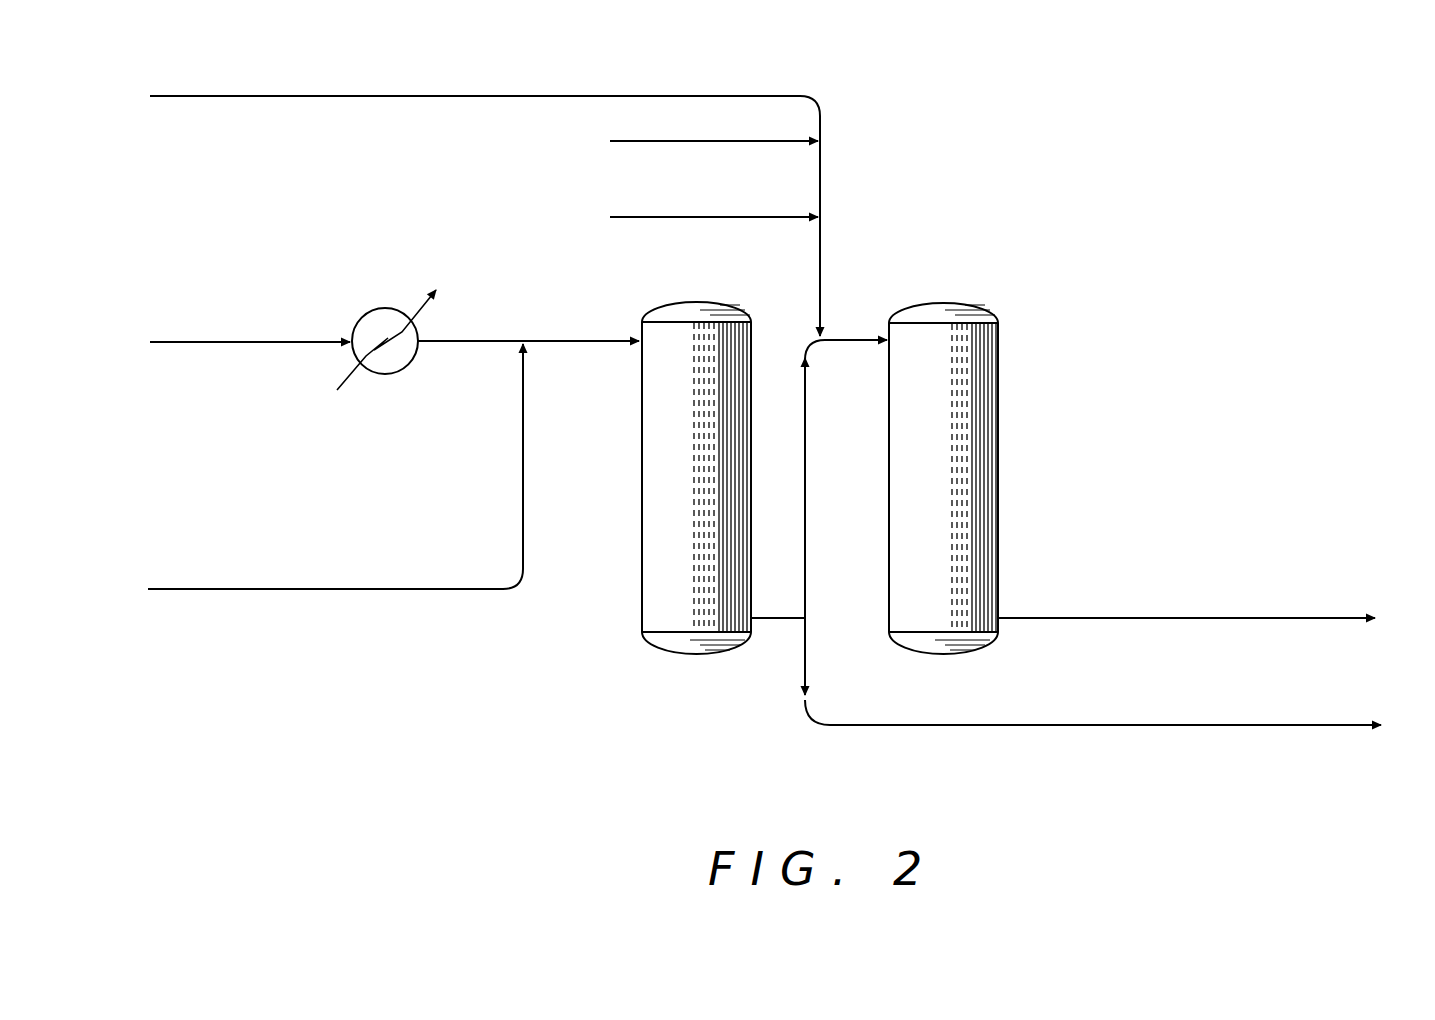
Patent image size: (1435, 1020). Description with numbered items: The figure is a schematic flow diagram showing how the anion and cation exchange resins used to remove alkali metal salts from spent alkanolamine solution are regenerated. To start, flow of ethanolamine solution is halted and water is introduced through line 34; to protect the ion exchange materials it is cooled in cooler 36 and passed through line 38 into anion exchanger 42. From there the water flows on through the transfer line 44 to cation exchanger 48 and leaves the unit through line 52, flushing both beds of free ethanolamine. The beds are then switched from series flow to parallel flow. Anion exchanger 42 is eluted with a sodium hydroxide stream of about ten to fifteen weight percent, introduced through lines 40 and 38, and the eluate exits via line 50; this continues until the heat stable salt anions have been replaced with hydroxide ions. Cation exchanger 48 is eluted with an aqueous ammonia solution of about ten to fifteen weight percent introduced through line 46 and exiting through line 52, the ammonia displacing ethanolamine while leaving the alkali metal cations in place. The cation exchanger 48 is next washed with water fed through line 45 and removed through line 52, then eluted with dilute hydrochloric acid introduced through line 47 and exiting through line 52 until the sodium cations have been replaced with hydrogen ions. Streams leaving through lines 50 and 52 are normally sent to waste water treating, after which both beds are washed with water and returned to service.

The line 34 is at (240, 344).
The cooler 36 is at (364, 312).
The line 38 is at (497, 340).
The line 40 is at (240, 591).
The anion exchanger 42 is at (716, 447).
The transfer line from anion exchanger to cation exchanger 44 is at (805, 460).
The line 45 is at (621, 145).
The line 46 is at (394, 98).
The line 47 is at (621, 220).
The cation exchanger 48 is at (963, 447).
The line 50 is at (1105, 724).
The line 52 is at (1173, 617).